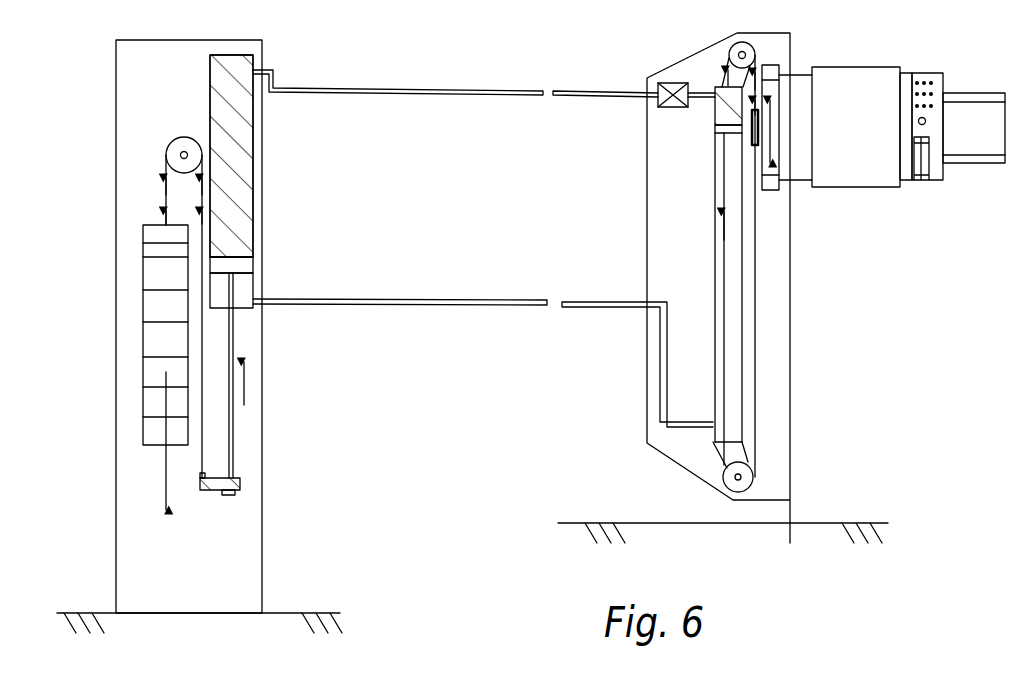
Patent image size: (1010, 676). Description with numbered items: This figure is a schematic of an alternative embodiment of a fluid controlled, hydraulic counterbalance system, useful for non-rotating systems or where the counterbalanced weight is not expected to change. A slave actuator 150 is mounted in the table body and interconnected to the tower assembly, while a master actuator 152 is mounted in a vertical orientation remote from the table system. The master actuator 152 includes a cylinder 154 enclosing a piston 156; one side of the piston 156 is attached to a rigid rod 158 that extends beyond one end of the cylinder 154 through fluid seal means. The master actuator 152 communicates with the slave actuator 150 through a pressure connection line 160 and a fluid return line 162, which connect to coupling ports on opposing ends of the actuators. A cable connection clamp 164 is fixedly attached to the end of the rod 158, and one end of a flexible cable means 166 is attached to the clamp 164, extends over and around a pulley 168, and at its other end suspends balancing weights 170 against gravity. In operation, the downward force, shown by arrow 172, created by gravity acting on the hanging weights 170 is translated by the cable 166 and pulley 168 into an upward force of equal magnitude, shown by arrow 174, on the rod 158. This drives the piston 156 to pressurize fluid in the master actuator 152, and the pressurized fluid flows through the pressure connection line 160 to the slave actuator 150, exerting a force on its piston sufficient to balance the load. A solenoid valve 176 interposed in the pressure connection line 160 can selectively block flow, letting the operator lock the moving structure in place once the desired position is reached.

The slave actuator 150 is at (712, 250).
The master actuator 152 is at (258, 224).
The cylinder 154 is at (255, 172).
The piston 156 is at (255, 285).
The rigid rod 158 is at (234, 338).
The pressure connection line 160 is at (320, 86).
The fluid return line 162 is at (376, 307).
The cable connection clamp 164 is at (212, 493).
The flexible cable means 166 is at (198, 463).
The pulley 168 is at (178, 141).
The balancing weights 170 is at (143, 308).
The arrow 172 is at (164, 478).
The arrow 174 is at (247, 390).
The solenoid valve 176 is at (672, 83).